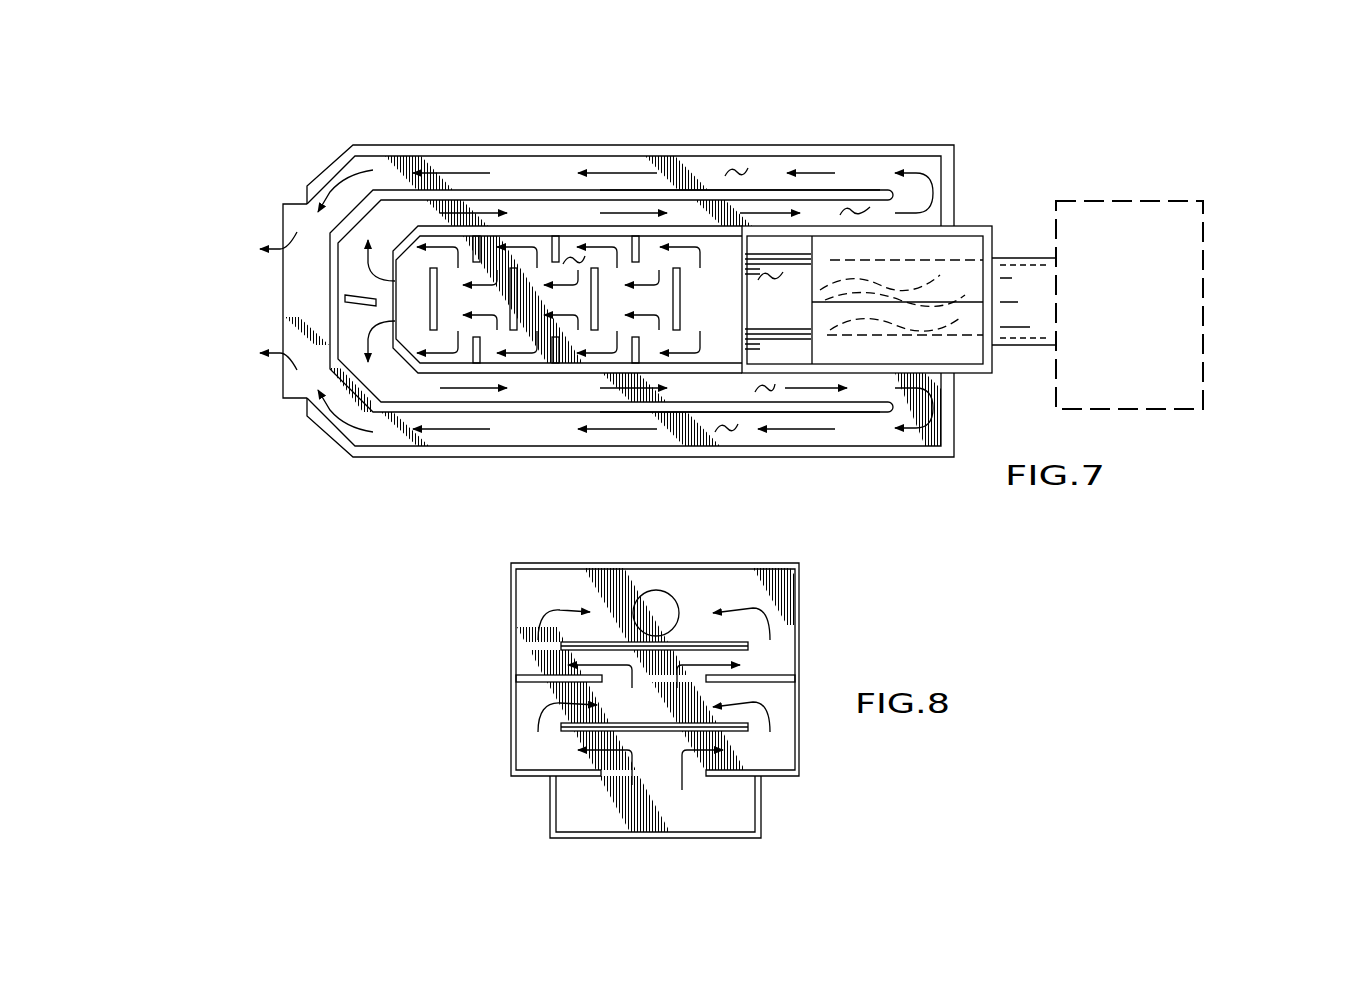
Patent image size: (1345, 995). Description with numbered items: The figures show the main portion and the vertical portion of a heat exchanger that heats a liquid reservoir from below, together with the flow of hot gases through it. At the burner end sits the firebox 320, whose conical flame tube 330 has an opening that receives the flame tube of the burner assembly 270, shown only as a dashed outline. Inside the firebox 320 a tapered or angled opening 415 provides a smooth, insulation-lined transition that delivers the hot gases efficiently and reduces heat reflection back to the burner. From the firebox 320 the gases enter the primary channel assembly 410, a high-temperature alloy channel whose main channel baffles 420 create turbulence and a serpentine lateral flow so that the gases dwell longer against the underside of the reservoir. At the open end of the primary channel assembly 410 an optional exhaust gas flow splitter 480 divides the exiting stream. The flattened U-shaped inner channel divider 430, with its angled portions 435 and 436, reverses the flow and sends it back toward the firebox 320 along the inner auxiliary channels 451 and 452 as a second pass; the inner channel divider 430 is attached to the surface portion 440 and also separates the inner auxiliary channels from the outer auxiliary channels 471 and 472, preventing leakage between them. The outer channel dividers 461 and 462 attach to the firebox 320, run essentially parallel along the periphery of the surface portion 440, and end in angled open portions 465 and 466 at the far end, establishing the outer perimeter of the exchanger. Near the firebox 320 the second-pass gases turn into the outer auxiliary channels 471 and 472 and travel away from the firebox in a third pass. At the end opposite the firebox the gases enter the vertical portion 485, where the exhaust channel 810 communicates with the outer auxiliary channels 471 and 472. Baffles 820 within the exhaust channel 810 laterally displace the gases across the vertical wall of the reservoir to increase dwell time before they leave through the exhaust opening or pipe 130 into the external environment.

In FIG. 8, the exhaust opening or pipe 130 is at (658, 590).
In FIG. 7, the burner assembly 270 is at (1203, 275).
In FIG. 7, the firebox 320 is at (975, 225).
In FIG. 7, the conical flame tube 330 is at (1022, 257).
In FIG. 7, the primary channel assembly 410 is at (568, 255).
In FIG. 7, the tapered or angled opening 415 is at (768, 276).
In FIG. 7, the main channel baffles 420 is at (513, 330).
In FIG. 7, the inner channel divider 430 is at (635, 197).
In FIG. 7, the angled portion 435 is at (358, 205).
In FIG. 7, the angled portion 436 is at (355, 397).
In FIG. 7, the surface portion 440 is at (312, 302).
In FIG. 7, the inner auxiliary channel 451 is at (857, 211).
In FIG. 7, the inner auxiliary channel 452 is at (758, 391).
In FIG. 7, the outer channel divider 461 is at (528, 150).
In FIG. 7, the outer channel divider 462 is at (500, 452).
In FIG. 7, the angled open portion 465 is at (331, 167).
In FIG. 7, the angled open portion 466 is at (320, 412).
In FIG. 7, the outer auxiliary channel 471 is at (742, 166).
In FIG. 7, the outer auxiliary channel 472 is at (722, 431).
In FIG. 7, the exhaust gas flow splitter 480 is at (368, 298).
In FIG. 8, the vertical portion 485 is at (872, 629).
In FIG. 8, the exhaust channel 810 is at (658, 807).
In FIG. 8, the baffles 820 is at (771, 682).